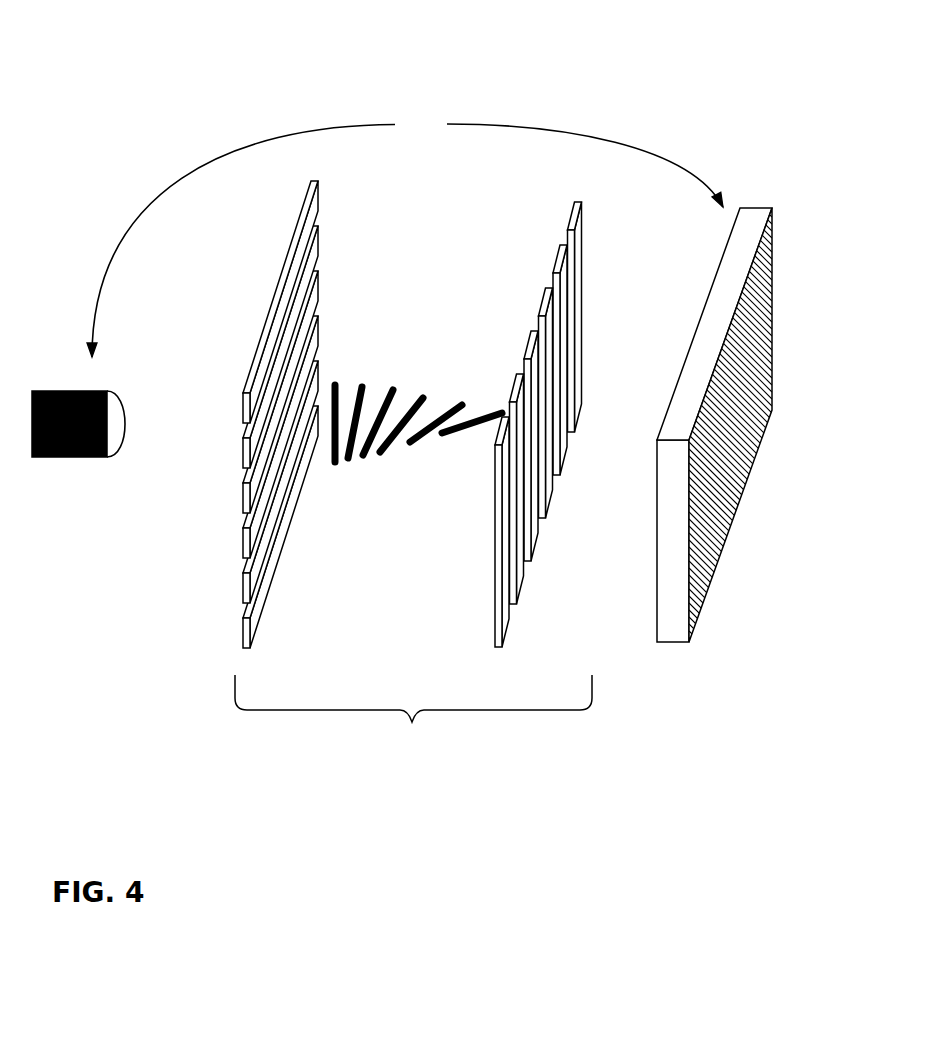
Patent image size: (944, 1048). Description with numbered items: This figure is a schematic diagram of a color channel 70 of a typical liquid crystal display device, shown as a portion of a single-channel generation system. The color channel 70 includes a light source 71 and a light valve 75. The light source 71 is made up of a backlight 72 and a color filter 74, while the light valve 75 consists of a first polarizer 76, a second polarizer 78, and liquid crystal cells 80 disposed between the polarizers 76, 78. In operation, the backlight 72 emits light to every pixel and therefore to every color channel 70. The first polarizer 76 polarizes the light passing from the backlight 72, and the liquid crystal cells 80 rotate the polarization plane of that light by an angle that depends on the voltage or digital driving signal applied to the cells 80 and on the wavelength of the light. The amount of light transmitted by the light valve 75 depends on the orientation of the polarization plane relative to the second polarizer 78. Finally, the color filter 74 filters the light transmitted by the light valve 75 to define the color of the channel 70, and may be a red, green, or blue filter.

The color channel 70 is at (117, 92).
The light source 71 is at (405, 233).
The backlight 72 is at (82, 390).
The color filter 74 is at (757, 493).
The light valve 75 is at (364, 474).
The first polarizer 76 is at (227, 567).
The second polarizer 78 is at (473, 568).
The liquid crystal cells 80 is at (384, 365).